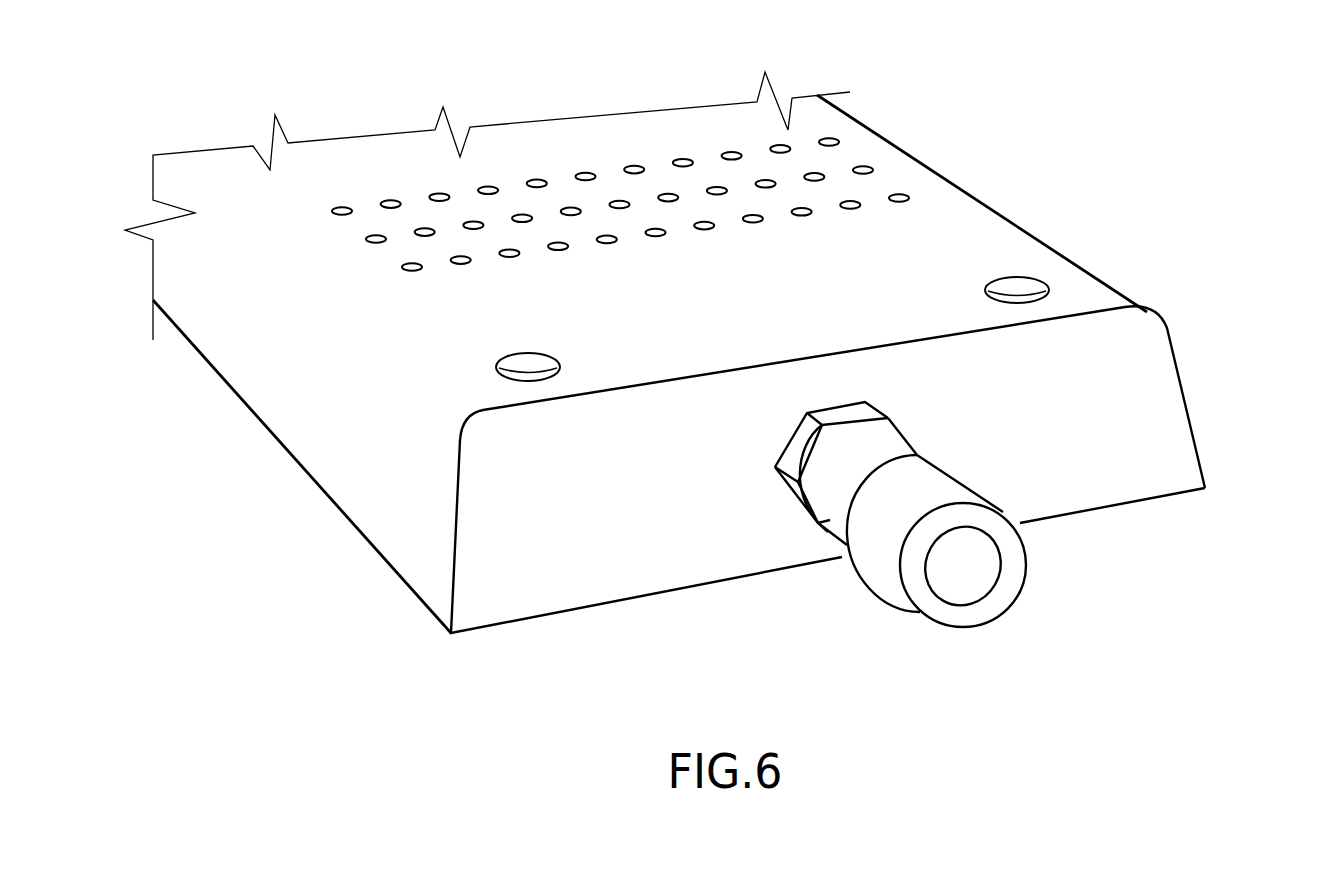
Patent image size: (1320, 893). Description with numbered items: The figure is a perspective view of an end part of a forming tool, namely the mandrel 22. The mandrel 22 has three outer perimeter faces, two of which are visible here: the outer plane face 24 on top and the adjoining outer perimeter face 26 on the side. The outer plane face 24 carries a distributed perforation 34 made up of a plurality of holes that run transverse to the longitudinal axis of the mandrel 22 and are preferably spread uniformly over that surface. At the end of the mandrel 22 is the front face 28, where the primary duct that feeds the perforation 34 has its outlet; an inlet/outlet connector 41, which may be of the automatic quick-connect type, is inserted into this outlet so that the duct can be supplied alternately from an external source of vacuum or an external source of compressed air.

The mandrel 22 is at (1118, 287).
The outer plane face 24 is at (970, 230).
The outer perimeter face 26 is at (367, 482).
The front face 28 is at (1163, 430).
The distributed perforation 34 is at (783, 143).
The inlet/outlet connector 41 is at (1023, 568).